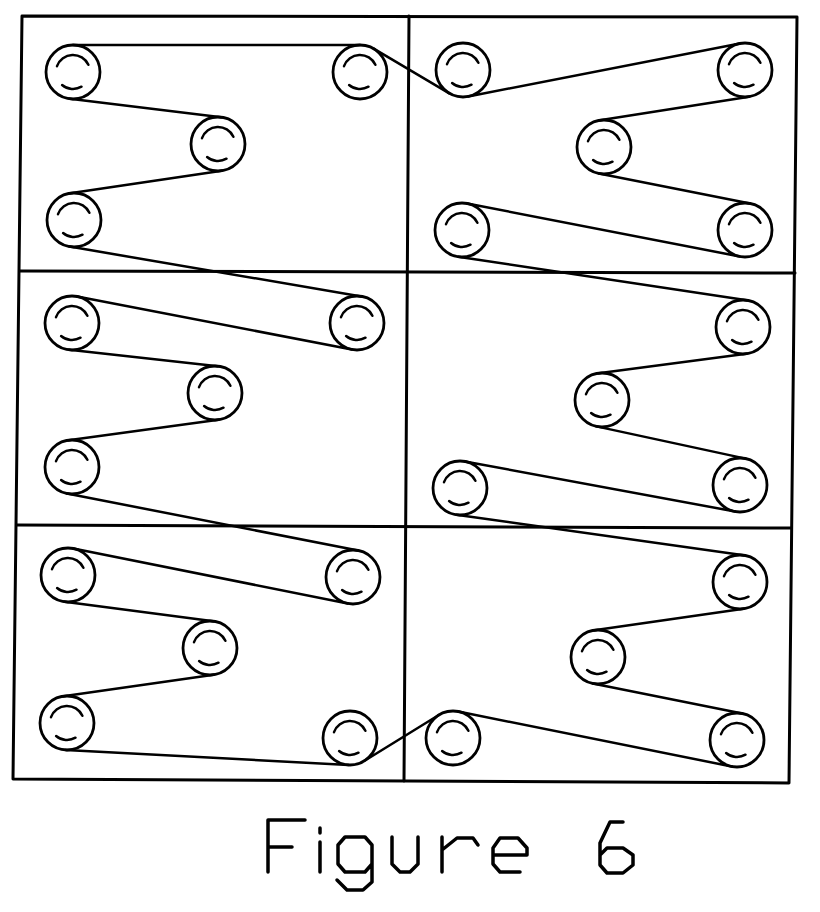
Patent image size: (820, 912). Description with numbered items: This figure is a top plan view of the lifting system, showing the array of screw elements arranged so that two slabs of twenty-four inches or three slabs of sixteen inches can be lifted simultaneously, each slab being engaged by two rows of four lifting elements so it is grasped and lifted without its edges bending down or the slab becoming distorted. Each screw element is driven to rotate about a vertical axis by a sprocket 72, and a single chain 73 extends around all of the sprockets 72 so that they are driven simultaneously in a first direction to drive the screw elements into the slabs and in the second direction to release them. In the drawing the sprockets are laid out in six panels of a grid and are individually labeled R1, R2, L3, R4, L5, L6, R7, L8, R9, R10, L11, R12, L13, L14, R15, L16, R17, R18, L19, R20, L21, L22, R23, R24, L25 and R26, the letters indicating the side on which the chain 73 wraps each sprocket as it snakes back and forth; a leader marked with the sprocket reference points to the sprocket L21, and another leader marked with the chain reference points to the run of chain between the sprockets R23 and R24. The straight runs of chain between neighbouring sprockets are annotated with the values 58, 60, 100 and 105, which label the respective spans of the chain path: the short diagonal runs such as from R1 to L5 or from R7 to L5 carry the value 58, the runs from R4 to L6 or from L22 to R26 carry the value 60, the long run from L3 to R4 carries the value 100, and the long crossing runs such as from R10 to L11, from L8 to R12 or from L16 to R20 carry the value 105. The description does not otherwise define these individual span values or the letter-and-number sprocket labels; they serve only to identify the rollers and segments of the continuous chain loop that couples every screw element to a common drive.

The belt span of 58 units between rollers 58 is at (407, 357).
The belt span of 60 units between rollers 60 is at (406, 403).
The belt span of 100 units between rollers 100 is at (604, 70).
The belt span of 105 units between rollers 105 is at (406, 485).
The sprocket 72 is at (185, 634).
The chain 73 is at (225, 748).
The right-wrap roller R1 is at (73, 72).
The right-wrap roller R2 is at (360, 72).
The left-wrap roller L3 is at (463, 70).
The right-wrap roller R4 is at (745, 70).
The left-wrap roller L5 is at (218, 144).
The left-wrap roller L6 is at (604, 147).
The right-wrap roller R7 is at (74, 220).
The left-wrap roller L8 is at (462, 230).
The right-wrap roller R9 is at (745, 230).
The right-wrap roller R10 is at (72, 323).
The left-wrap roller L11 is at (357, 323).
The right-wrap roller R12 is at (743, 327).
The left-wrap roller L13 is at (215, 393).
The left-wrap roller L14 is at (602, 400).
The right-wrap roller R15 is at (72, 467).
The left-wrap roller L16 is at (460, 488).
The right-wrap roller R17 is at (740, 485).
The right-wrap roller R18 is at (68, 575).
The left-wrap roller L19 is at (353, 577).
The right-wrap roller R20 is at (740, 582).
The left-wrap roller L21 is at (240, 641).
The left-wrap roller L22 is at (598, 657).
The right-wrap roller R23 is at (67, 723).
The right-wrap roller R24 is at (350, 738).
The left-wrap roller L25 is at (453, 738).
The right-wrap roller R26 is at (737, 740).